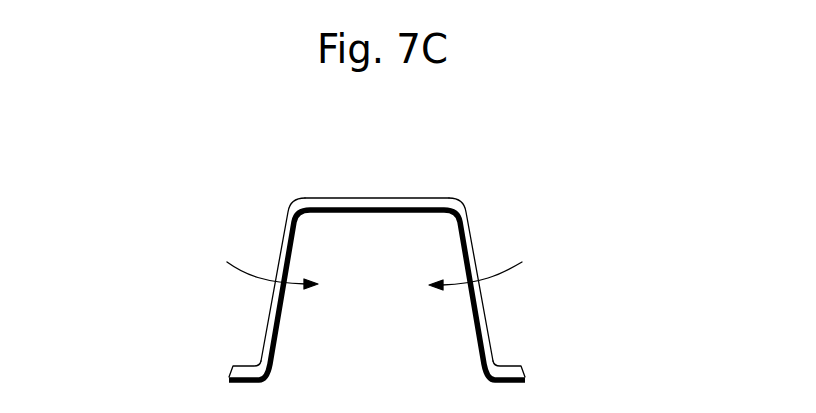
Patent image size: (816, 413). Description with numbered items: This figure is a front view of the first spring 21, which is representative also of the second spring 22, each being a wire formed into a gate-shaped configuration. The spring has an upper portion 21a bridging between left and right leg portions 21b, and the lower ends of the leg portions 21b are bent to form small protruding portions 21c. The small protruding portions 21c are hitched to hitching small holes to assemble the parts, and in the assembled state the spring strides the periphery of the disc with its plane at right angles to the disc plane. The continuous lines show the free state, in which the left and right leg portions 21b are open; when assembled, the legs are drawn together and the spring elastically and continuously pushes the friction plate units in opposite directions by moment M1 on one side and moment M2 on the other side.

The first spring 21 is at (375, 238).
The second spring 22 is at (401, 198).
The top wall 21a is at (342, 203).
The leg portions 21b is at (272, 307).
The small protruding portions 21c is at (240, 365).
The moment M1 is at (265, 255).
The moment M2 is at (490, 256).